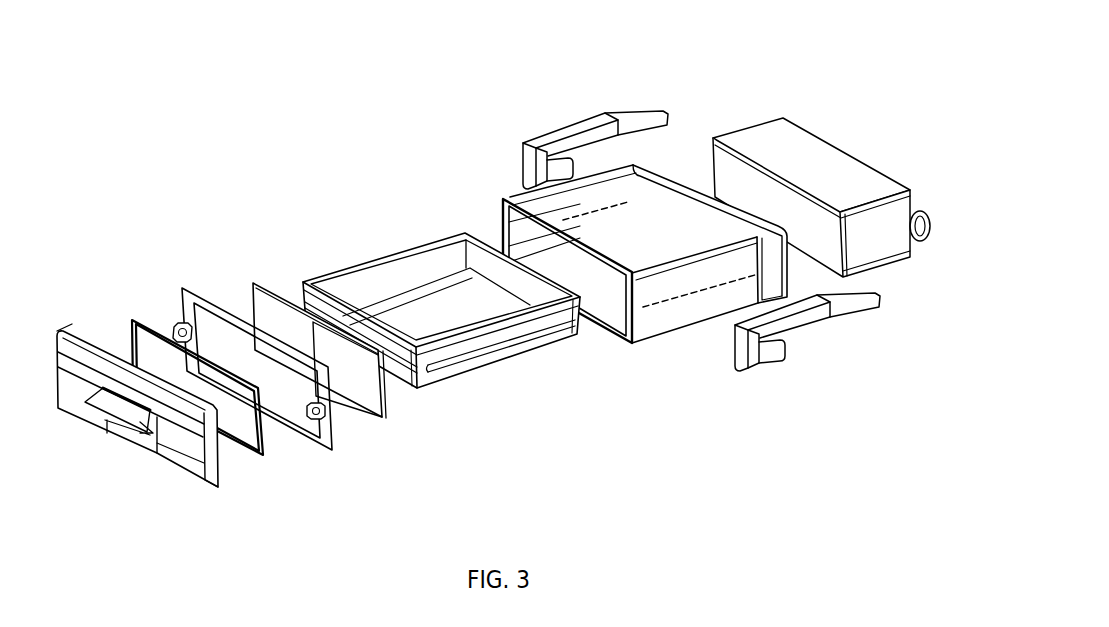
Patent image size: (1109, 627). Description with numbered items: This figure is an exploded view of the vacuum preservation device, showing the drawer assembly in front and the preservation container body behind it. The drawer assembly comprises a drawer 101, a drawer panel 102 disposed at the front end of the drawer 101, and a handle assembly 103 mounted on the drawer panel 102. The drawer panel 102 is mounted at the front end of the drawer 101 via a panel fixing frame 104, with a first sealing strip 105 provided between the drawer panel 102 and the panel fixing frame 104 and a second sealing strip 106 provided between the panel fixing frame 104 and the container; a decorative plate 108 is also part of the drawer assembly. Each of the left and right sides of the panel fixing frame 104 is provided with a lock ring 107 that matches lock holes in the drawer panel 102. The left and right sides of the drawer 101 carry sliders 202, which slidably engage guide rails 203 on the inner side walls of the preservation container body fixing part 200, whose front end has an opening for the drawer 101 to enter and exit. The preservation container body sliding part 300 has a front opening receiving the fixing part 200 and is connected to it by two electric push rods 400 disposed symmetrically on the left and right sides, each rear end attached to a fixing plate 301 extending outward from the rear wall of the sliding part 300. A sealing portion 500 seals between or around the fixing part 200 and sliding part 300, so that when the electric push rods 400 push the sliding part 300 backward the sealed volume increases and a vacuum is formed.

The drawer 101 is at (441, 319).
The drawer panel 102 is at (208, 463).
The handle assembly 103 is at (127, 412).
The panel fixing frame 104 is at (208, 292).
The first sealing strip 105 is at (135, 320).
The second sealing strip 106 is at (273, 290).
The lock ring 107 is at (330, 422).
The decorative plate 108 is at (171, 394).
The preservation container body fixing part 200 is at (658, 208).
The slider 202 is at (508, 343).
The guide rail 203 is at (502, 220).
The preservation container body sliding part 300 is at (843, 157).
The fixing plate 301 is at (922, 211).
The electric push rod 400 is at (817, 327).
The sealing portion 500 is at (743, 232).